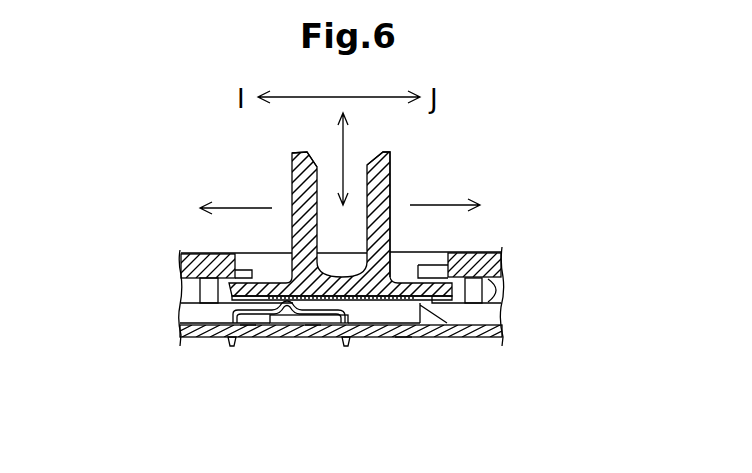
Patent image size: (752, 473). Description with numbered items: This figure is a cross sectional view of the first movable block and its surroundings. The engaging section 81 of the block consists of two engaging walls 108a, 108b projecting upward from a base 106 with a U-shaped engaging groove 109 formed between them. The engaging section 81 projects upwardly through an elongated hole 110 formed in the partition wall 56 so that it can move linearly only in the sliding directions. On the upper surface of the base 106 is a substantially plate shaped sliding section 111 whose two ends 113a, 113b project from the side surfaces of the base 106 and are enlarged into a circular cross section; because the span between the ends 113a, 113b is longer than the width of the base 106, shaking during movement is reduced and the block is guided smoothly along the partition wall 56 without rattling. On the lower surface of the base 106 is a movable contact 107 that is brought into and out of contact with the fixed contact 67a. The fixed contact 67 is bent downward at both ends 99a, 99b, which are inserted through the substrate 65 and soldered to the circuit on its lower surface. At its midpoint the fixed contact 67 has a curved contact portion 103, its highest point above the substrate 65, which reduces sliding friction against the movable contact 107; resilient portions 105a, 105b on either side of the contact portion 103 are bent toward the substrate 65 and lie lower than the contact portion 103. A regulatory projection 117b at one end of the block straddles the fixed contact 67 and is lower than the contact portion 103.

The partition wall 56 is at (483, 252).
The substrate 65 is at (504, 328).
The fixed contact 67a is at (182, 328).
The fixed contact 67 is at (191, 323).
The engaging section 81 is at (310, 153).
The end of fixed contact 99a is at (231, 344).
The end of fixed contact 99b is at (346, 344).
The contact portion 103 is at (291, 327).
The resilient portion 105a is at (248, 340).
The resilient portion 105b is at (313, 340).
The base 106 is at (260, 275).
The movable contact 107 is at (403, 334).
The engaging wall 108a is at (292, 190).
The engaging wall 108b is at (390, 177).
The engaging groove 109 is at (317, 180).
The elongated hole 110 is at (420, 266).
The sliding section 111 is at (205, 308).
The end of sliding section 113a is at (180, 285).
The end of sliding section 113b is at (504, 285).
The regulatory projection 117b is at (449, 326).